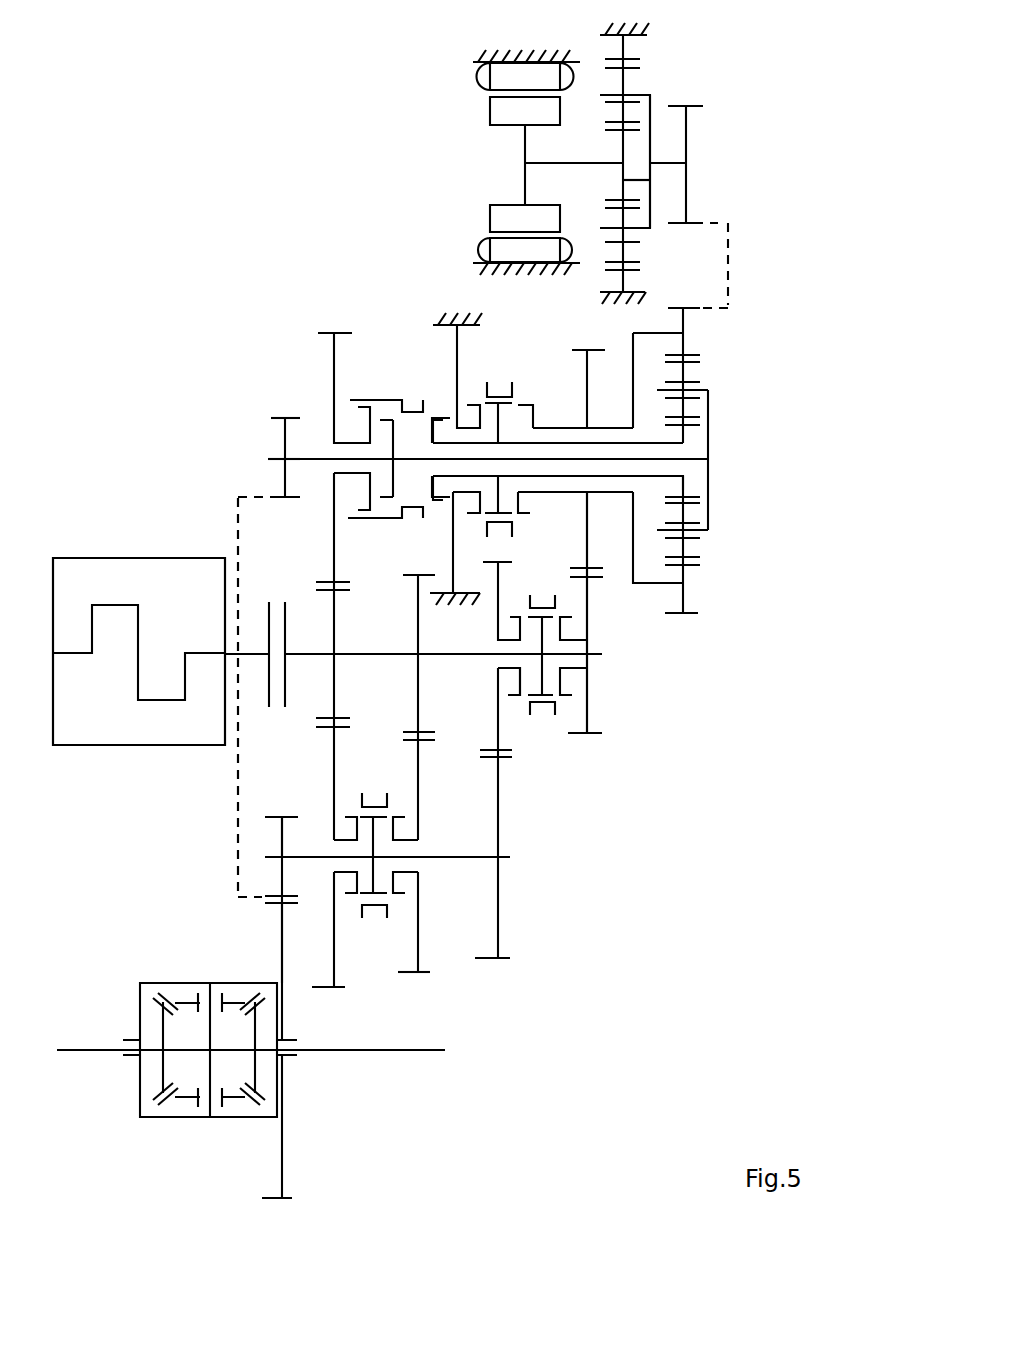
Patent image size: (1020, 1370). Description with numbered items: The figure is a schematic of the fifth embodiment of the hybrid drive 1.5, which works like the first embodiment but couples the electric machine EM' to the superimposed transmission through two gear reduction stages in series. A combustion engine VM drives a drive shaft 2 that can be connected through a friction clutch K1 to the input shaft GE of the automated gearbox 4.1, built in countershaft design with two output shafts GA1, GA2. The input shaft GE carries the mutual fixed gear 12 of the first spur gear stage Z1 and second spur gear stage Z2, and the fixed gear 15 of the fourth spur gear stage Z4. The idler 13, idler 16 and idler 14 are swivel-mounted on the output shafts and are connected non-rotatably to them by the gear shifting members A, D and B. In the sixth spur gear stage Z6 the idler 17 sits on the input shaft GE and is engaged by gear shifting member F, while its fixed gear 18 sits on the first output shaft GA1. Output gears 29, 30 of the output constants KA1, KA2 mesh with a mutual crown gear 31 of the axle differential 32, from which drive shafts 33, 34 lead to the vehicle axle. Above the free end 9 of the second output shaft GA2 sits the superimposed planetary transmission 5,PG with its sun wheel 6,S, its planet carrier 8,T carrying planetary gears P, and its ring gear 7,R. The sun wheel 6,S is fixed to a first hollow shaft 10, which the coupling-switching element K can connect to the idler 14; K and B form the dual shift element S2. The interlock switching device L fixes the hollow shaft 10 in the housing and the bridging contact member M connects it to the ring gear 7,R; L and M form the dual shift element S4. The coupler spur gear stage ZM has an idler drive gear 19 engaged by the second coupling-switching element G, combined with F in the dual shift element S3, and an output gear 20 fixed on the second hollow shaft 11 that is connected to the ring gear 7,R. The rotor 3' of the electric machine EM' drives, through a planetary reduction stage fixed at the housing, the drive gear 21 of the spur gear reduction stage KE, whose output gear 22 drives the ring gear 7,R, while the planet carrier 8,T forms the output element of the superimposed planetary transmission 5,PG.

The hybrid drive 1.5 is at (173, 108).
The electric machine EM' is at (488, 144).
The rotor 3' is at (459, 113).
The gear reduction stage KE is at (688, 90).
The drive gear 21 is at (686, 137).
The output gear 22 is at (690, 322).
The planetary gears P is at (690, 375).
The free end 9 is at (690, 457).
The sun wheel 6,S is at (683, 483).
The planet carrier 8,T is at (655, 530).
The ring gear 7,R is at (683, 575).
The superimposed transmission 5,PG is at (730, 602).
The second spur gear stage Z2 is at (337, 315).
The idler 14 is at (338, 367).
The second output shaft GA2 is at (275, 458).
The output gear 30 is at (282, 443).
The second output constant KA2 is at (285, 397).
The dual shift element S2 is at (389, 432).
The shifting element S4 is at (508, 396).
The second hollow shaft 11 is at (555, 422).
The output gear 20 is at (587, 388).
The first hollow shaft 10 is at (627, 445).
The combustion engine VM is at (137, 585).
The drive shaft 2 is at (207, 650).
The input shaft GE is at (310, 650).
The gear shifting member B is at (385, 507).
The coupling-switching element K is at (440, 477).
The interlock switching device L is at (456, 459).
The bridging contact member M is at (511, 513).
The friction clutch K1 is at (277, 637).
The dual shift element S3 is at (542, 638).
The fixed gear 12 is at (338, 665).
The fixed gear 15 is at (420, 673).
The gear shifting member F is at (509, 699).
The second coupling-switching element G is at (571, 699).
The first output constant KA1 is at (283, 797).
The idler 17 is at (500, 728).
The drive gear 19 is at (587, 703).
The output gear 29 is at (275, 837).
The coupler spur gear stage ZM is at (583, 750).
The first output shaft GA1 is at (275, 855).
The crown gear 31 is at (275, 930).
The axle differential 32 is at (185, 1033).
The gear shifting member A is at (345, 874).
The gear shifting member D is at (405, 874).
The idler 13 is at (335, 940).
The idler 16 is at (417, 930).
The fixed gear 18 is at (497, 898).
The automated gearbox 4.1 is at (675, 937).
The drive shaft 33 is at (90, 1053).
The first spur gear stage Z1 is at (330, 1008).
The fourth spur gear stage Z4 is at (413, 992).
The sixth spur gear stage Z6 is at (490, 978).
The drive shaft 34 is at (365, 1052).